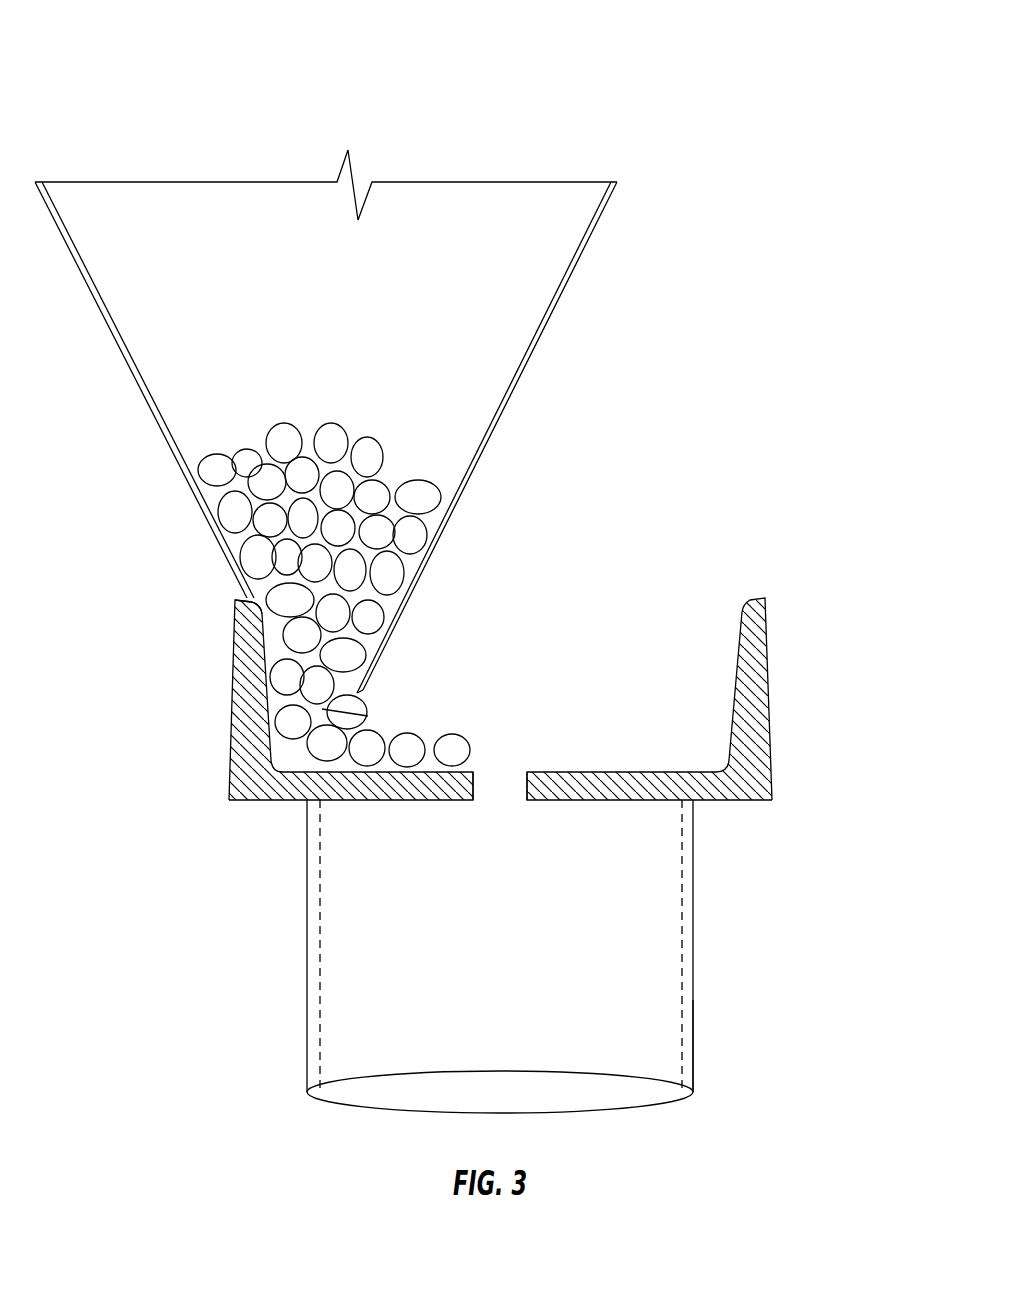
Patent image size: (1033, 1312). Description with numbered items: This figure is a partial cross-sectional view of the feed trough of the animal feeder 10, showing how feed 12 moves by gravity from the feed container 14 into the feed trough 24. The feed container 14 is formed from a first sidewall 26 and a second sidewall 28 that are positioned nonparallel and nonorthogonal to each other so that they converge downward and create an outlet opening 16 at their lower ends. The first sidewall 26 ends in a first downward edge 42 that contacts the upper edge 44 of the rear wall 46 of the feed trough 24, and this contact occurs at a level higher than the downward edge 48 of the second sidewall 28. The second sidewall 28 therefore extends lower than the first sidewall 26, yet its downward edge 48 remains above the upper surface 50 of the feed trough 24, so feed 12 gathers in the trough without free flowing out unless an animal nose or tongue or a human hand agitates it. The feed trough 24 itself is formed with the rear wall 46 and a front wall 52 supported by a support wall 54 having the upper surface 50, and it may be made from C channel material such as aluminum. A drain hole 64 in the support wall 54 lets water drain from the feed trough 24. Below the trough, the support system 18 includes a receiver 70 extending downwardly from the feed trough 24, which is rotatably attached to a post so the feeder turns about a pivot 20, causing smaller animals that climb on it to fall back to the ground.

The animal feeder 10 is at (606, 70).
The feed 12 is at (332, 423).
The feed container 14 is at (604, 210).
The outlet opening 16 is at (368, 716).
The support system 18 is at (752, 858).
The pivot 20 is at (722, 992).
The feed trough 24 is at (587, 646).
The first sidewall 26 is at (146, 402).
The second sidewall 28 is at (543, 333).
The first downward edge 42 is at (251, 600).
The upper edge 44 is at (251, 612).
The rear wall 46 is at (243, 700).
The downward edge 48 is at (363, 694).
The upper surface 50 is at (565, 771).
The front wall 52 is at (755, 697).
The support wall 54 is at (633, 782).
The drain hole 64 is at (498, 782).
The receiver 70 is at (694, 1052).